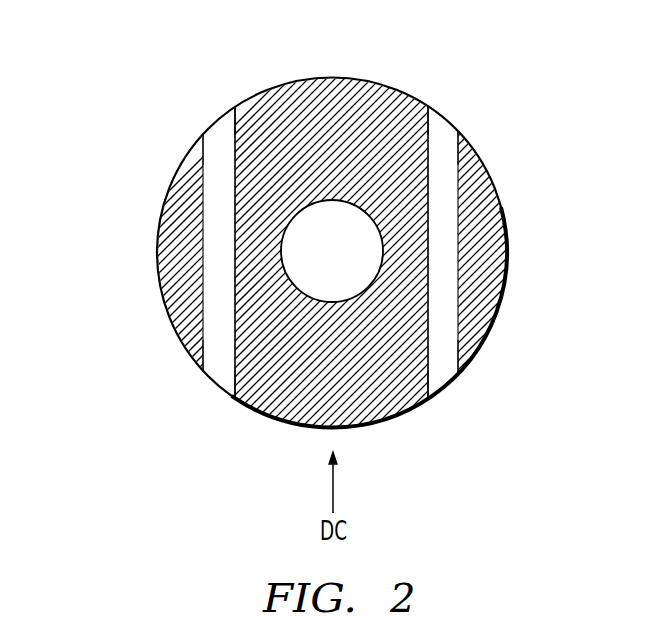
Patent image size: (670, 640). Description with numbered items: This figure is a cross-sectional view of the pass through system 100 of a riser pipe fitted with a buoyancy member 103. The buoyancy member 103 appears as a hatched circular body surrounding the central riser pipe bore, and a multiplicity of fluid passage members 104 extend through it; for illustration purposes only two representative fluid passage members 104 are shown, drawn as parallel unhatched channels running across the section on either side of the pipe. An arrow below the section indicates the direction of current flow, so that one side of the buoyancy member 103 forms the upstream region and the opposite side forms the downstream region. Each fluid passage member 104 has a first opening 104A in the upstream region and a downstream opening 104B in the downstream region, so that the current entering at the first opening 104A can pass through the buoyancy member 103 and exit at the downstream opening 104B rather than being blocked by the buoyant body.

The pass through system 100 is at (95, 80).
The buoyancy member 103 is at (377, 107).
The fluid passage member 104 is at (215, 213).
The first opening 104A is at (222, 367).
The downstream opening 104B is at (220, 137).